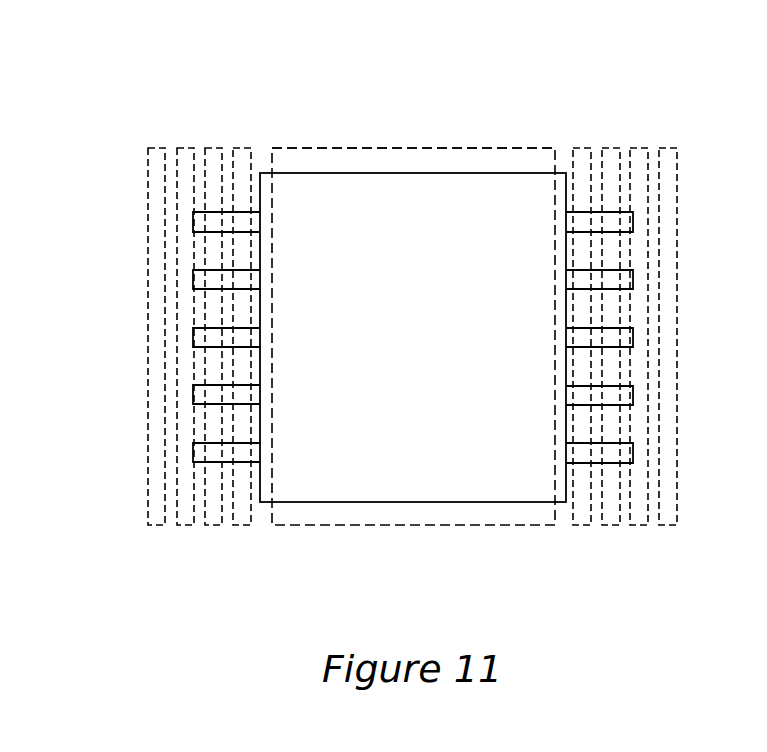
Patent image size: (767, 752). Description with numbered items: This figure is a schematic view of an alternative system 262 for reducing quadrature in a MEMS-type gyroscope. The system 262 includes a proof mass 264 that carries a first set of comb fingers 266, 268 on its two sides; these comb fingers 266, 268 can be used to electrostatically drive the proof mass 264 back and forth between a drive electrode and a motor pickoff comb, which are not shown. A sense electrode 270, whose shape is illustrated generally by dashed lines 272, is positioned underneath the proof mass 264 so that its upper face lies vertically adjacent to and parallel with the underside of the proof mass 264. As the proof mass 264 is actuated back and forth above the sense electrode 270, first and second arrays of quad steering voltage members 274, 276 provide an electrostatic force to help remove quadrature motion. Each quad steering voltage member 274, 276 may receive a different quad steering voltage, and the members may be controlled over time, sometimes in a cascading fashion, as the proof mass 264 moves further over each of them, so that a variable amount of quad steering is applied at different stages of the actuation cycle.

The alternative system 262 is at (430, 105).
The proof mass 264 is at (562, 187).
The comb fingers 266 is at (195, 278).
The comb fingers 268 is at (628, 277).
The sense electrode 270 is at (432, 193).
The dashed lines 272 is at (357, 148).
The quad steering voltage members 274 is at (247, 526).
The quad steering voltage members 276 is at (582, 526).